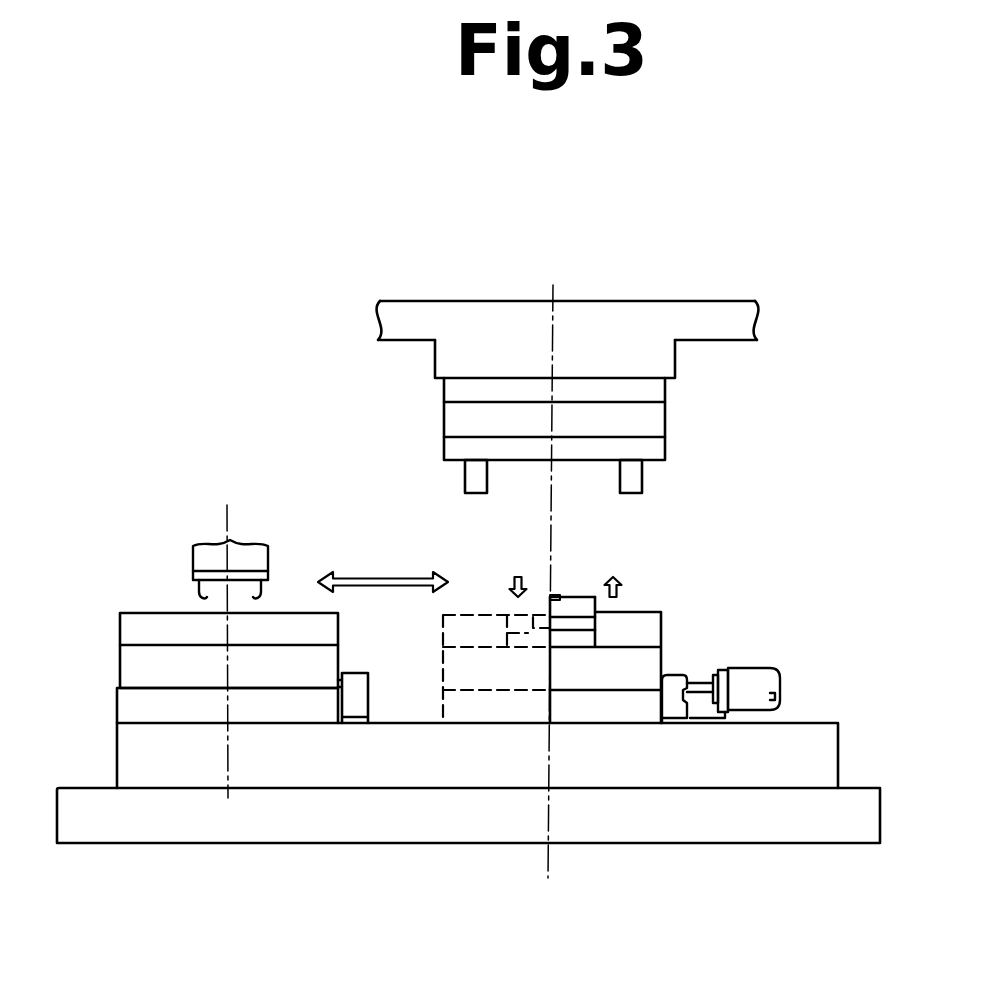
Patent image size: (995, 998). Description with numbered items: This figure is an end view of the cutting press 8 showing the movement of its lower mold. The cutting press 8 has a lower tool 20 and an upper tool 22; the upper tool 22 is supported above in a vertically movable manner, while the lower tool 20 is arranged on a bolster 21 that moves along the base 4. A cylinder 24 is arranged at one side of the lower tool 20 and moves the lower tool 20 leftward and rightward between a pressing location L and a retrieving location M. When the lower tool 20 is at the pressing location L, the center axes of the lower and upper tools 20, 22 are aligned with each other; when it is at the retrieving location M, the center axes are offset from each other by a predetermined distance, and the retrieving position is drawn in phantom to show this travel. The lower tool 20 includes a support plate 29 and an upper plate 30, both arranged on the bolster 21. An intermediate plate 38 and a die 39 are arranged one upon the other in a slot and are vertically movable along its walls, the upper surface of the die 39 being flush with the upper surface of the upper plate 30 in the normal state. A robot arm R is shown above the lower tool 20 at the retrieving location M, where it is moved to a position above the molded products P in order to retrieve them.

The base 4 is at (838, 757).
The cutting press 8 is at (568, 328).
The lower tool 20 is at (431, 655).
The bolster 21 is at (117, 712).
The upper tool 22 is at (665, 424).
The cylinder 24 is at (758, 665).
The support plate 29 is at (443, 665).
The upper plate 30 is at (443, 628).
The intermediate plate 38 is at (597, 628).
The die 39 is at (587, 595).
The pressing location L is at (555, 557).
The retrieving location M is at (223, 629).
The molded products P is at (557, 592).
The robot arm R is at (193, 562).